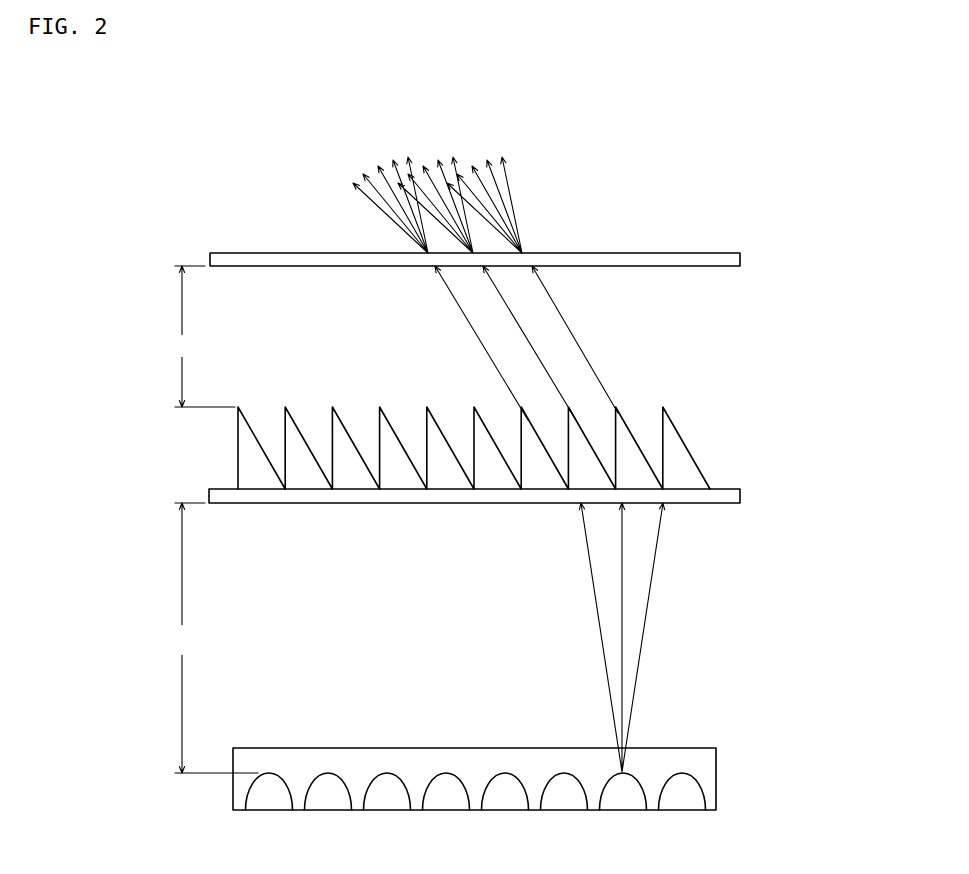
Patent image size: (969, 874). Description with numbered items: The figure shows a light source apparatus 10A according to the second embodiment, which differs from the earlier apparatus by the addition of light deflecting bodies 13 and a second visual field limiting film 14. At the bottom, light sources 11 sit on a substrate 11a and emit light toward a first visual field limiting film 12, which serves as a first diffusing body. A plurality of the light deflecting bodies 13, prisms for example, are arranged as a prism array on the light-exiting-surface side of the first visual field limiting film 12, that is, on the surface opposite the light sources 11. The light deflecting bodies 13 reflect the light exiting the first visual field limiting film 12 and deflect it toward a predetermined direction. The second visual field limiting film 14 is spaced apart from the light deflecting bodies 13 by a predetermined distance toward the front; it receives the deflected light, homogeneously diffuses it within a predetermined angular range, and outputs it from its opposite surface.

The light source apparatus 10A is at (718, 190).
The light sources 11 is at (626, 797).
The light source substrate 11a is at (717, 778).
The first visual field limiting film 12 is at (742, 495).
The light deflecting bodies 13 is at (693, 440).
The second visual field limiting film 14 is at (742, 260).